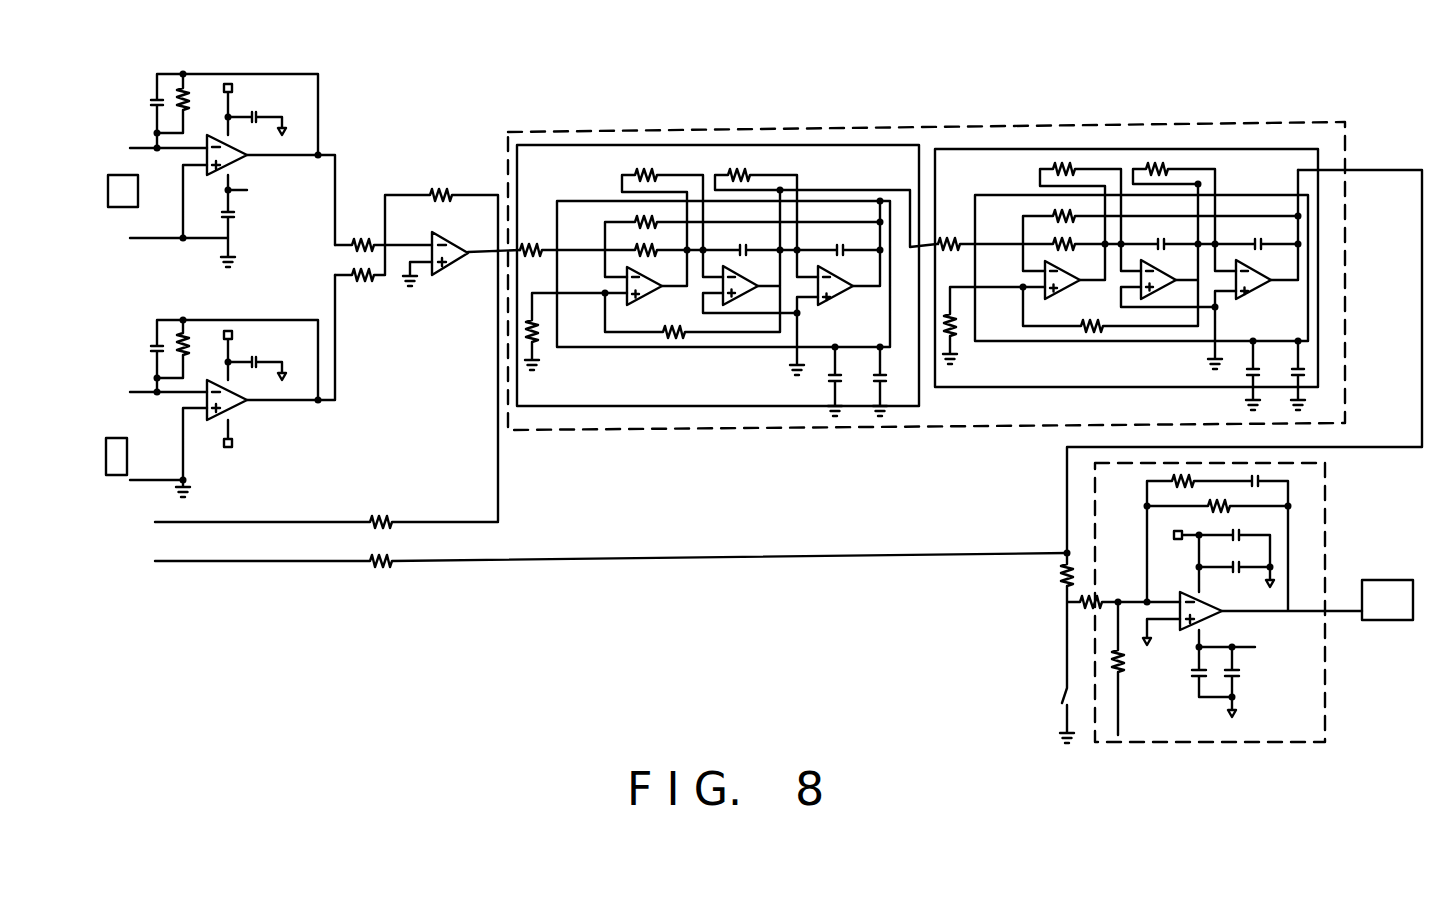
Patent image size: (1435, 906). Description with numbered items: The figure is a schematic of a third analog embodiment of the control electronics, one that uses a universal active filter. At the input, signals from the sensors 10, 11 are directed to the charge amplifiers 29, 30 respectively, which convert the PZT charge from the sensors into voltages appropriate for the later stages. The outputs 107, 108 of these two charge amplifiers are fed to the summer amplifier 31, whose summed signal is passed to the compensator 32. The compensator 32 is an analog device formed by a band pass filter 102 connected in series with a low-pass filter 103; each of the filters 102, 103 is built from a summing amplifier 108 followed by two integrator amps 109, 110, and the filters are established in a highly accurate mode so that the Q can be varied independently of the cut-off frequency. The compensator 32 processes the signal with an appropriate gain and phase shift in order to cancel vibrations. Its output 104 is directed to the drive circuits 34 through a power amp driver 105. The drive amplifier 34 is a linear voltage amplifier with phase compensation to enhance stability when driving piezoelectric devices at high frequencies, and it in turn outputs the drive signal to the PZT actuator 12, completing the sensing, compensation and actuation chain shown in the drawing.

The sensor 10 is at (111, 438).
The sensor 11 is at (117, 173).
The PZT actuator 12 is at (1378, 580).
The sensor charge amp 29 is at (249, 404).
The charge amp circuit 30 is at (249, 158).
The summer amplifier 31 is at (448, 268).
The compensator 32 is at (1255, 122).
The drive amp 34 is at (1325, 707).
The band pass filter 102 is at (727, 280).
The low-pass filter 103 is at (1126, 279).
The output 104 is at (1337, 447).
The power amp driver 105 is at (1213, 615).
The output 107 is at (335, 184).
The summing amplifier 108 is at (335, 333).
The integrator amp 109 is at (748, 300).
The integrator amp 110 is at (833, 302).